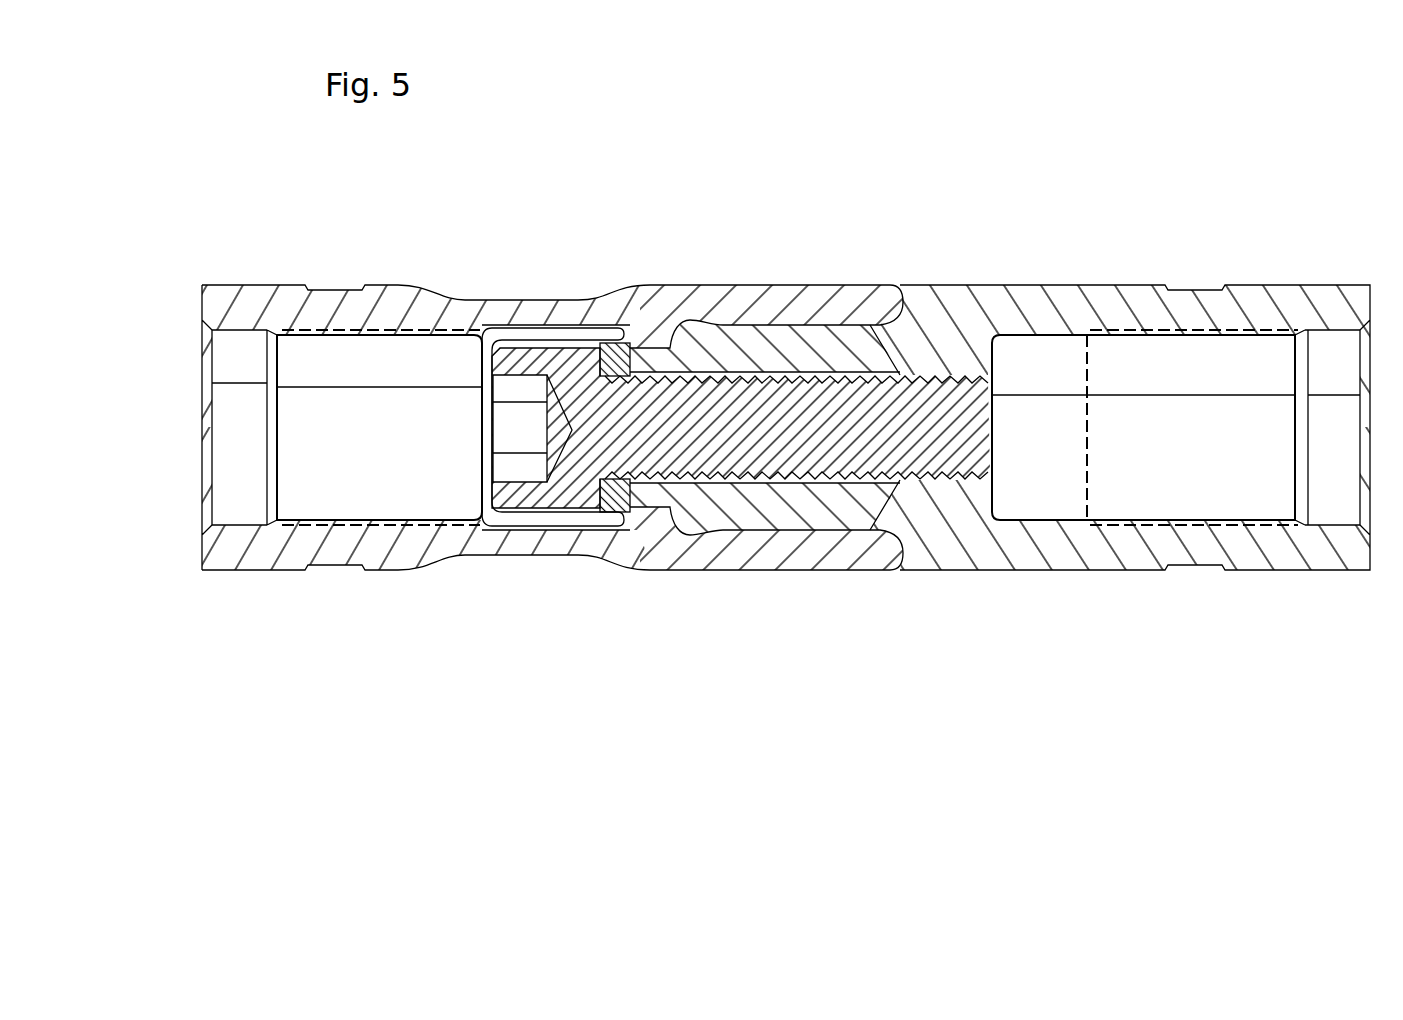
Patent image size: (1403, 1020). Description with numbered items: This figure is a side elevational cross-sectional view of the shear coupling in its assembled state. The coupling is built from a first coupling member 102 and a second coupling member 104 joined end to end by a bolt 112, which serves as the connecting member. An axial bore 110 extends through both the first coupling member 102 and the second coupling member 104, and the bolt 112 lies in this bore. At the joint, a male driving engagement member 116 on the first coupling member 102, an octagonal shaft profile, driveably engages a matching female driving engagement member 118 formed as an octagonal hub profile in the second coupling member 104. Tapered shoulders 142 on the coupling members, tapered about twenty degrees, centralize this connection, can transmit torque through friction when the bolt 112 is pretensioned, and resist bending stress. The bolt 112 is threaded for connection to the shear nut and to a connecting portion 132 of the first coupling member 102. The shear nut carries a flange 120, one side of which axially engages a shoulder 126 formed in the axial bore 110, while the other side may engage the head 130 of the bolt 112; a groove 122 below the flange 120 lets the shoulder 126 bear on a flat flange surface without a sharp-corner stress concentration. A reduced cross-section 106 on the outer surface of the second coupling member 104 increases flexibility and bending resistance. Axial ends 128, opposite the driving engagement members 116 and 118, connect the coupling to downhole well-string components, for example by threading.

The first coupling member 102 is at (1065, 288).
The second coupling member 104 is at (735, 285).
The reduced cross-section 106 is at (472, 292).
The axial bore 110 is at (375, 478).
The bolt 112 is at (930, 440).
The male driving engagement member 116 is at (793, 517).
The female driving engagement member 118 is at (787, 323).
The flange 120 is at (587, 510).
The groove 122 is at (620, 507).
The shoulder 126 is at (603, 333).
The axial ends 128 is at (243, 480).
The head 130 is at (503, 510).
The connecting portion 132 is at (905, 365).
The tapered shoulders 142 is at (897, 318).